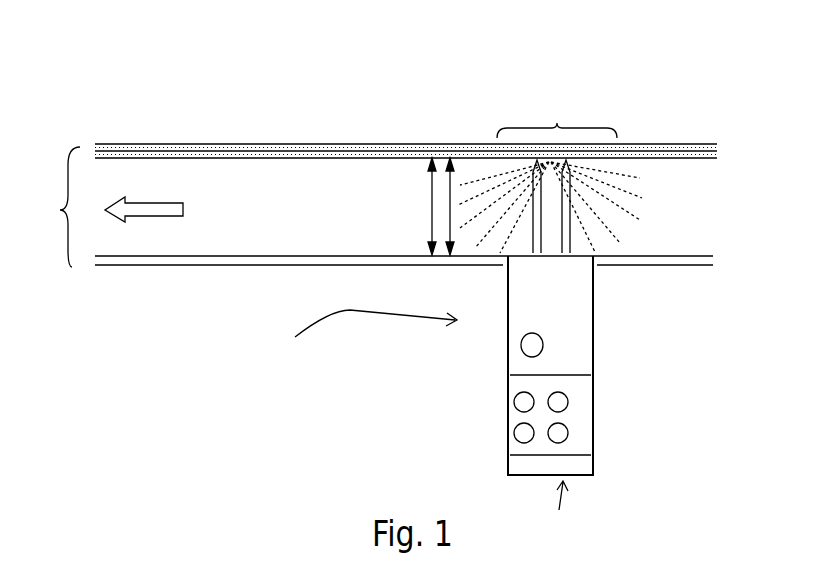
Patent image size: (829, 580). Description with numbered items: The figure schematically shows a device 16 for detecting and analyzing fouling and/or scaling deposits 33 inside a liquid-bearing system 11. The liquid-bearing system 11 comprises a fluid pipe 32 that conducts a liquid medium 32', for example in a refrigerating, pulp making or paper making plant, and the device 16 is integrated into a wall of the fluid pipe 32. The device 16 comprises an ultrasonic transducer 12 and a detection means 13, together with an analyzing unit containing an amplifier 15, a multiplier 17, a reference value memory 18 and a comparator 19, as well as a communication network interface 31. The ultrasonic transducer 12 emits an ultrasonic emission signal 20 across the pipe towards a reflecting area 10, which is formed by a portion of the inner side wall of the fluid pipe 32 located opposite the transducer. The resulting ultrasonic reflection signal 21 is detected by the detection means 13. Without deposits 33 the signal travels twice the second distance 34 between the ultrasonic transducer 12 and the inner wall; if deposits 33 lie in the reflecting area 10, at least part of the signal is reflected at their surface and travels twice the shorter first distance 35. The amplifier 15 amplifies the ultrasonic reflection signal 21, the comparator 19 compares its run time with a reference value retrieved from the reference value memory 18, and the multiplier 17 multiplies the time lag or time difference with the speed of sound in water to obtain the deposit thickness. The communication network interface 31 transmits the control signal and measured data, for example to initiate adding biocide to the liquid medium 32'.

The reflecting area 10 is at (603, 173).
The liquid-bearing system 11 is at (101, 207).
The ultrasonic transducer 12 is at (519, 355).
The detection means 13 is at (568, 305).
The amplifier 15 is at (512, 402).
The device 16 is at (359, 337).
The multiplier 17 is at (513, 441).
The reference value memory 18 is at (568, 405).
The comparator 19 is at (568, 437).
The ultrasonic emission signal 20 is at (588, 168).
The ultrasonic reflection signal 21 is at (630, 213).
The communication network interface 31 is at (554, 513).
The fluid pipe 32 is at (147, 89).
The liquid medium 32' is at (256, 115).
The fouling and/or scaling deposits 33 is at (310, 157).
The second distance 34 is at (428, 200).
The first distance 35 is at (457, 213).